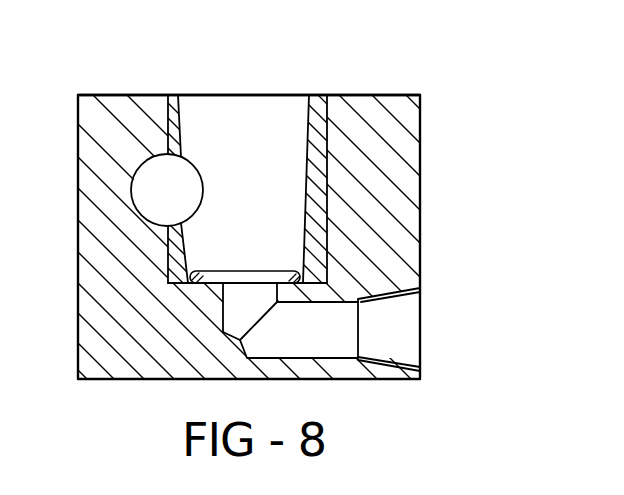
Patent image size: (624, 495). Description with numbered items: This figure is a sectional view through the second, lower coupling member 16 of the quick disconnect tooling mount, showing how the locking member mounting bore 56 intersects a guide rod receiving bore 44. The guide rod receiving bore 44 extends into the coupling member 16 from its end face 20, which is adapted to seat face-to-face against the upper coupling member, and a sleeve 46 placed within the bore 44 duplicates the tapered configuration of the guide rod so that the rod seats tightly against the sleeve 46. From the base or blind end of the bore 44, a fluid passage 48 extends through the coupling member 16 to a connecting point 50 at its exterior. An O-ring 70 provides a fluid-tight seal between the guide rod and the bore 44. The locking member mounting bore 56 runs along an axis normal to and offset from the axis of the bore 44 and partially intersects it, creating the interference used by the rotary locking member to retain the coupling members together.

The second coupling member 16 is at (422, 192).
The end face 20 is at (350, 93).
The guide rod receiving bore 44 is at (285, 140).
The sleeve 46 is at (305, 195).
The fluid passage 48 is at (320, 349).
The connecting point 50 is at (397, 356).
The locking member mounting bore 56 is at (198, 171).
The O-ring 70 is at (222, 270).